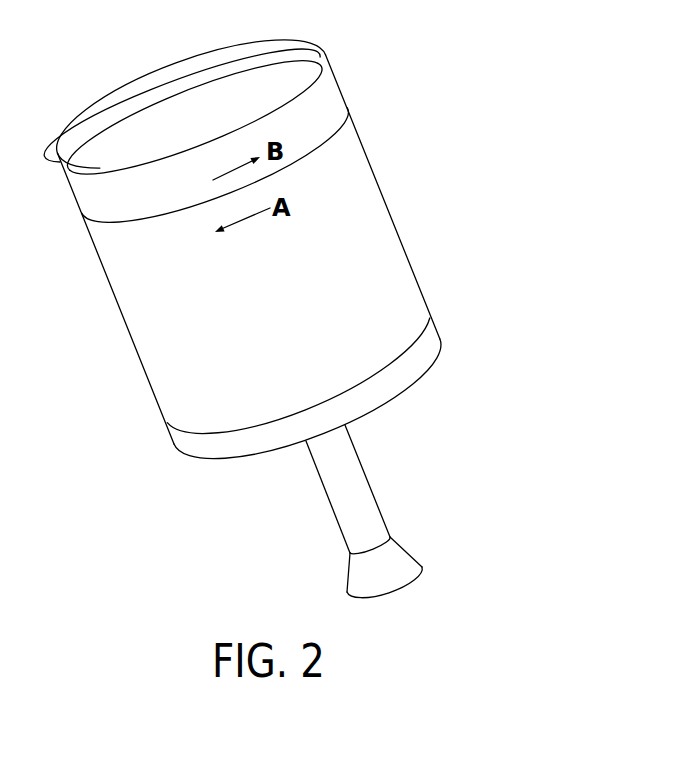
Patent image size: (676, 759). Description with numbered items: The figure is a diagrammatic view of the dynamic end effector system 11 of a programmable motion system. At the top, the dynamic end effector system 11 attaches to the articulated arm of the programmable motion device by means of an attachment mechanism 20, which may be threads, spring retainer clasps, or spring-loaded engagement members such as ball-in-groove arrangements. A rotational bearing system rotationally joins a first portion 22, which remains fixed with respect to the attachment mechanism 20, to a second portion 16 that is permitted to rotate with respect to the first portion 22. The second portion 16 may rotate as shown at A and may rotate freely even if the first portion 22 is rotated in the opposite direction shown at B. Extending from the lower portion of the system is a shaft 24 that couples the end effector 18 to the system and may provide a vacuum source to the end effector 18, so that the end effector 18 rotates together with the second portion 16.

The dynamic end effector system 11 is at (262, 315).
The second portion 16 is at (394, 238).
The end effector 18 is at (405, 547).
The attachment mechanism 20 is at (173, 85).
The first portion 22 is at (328, 95).
The shaft 24 is at (353, 487).